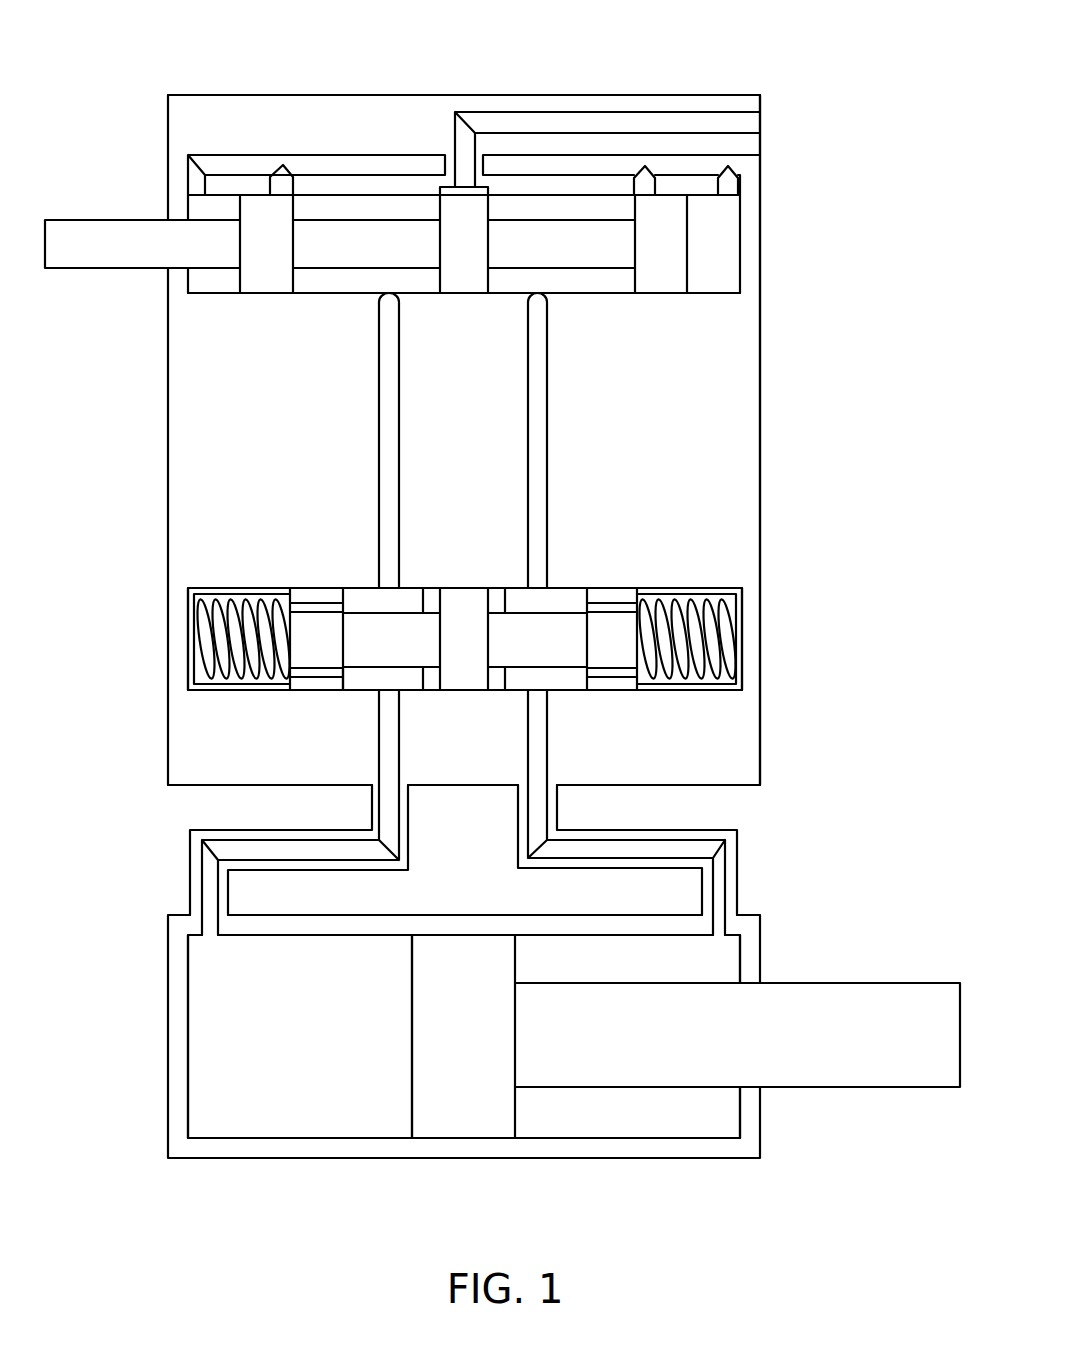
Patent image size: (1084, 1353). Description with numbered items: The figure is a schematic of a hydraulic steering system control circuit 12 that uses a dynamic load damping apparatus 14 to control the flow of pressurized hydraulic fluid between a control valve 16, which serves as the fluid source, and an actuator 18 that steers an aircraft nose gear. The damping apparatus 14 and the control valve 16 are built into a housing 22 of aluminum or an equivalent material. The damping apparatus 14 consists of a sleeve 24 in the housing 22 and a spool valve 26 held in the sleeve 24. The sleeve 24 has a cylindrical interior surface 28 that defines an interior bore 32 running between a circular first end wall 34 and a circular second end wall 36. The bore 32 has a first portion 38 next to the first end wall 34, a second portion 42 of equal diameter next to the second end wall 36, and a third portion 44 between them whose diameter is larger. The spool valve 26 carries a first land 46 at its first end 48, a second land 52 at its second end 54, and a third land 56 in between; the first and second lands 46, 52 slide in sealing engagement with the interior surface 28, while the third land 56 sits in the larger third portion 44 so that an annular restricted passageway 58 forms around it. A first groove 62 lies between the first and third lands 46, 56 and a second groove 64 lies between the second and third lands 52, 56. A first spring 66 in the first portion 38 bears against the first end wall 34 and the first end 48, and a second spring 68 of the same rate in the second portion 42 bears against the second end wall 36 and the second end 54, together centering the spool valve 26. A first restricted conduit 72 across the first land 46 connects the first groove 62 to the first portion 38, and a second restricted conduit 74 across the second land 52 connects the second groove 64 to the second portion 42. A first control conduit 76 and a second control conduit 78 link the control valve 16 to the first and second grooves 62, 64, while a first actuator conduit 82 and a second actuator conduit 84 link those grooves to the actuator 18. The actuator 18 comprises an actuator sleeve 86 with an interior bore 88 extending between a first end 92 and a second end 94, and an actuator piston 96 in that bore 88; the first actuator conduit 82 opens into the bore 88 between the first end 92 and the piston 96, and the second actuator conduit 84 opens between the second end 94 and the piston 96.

The hydraulic steering system control circuit 12 is at (777, 55).
The dynamic load damping apparatus 14 is at (764, 610).
The control valve 16 is at (127, 197).
The actuator 18 is at (780, 1100).
The housing 22 is at (190, 362).
The sleeve 24 is at (748, 591).
The spool valve 26 is at (742, 674).
The cylindrical interior surface 28 is at (363, 603).
The interior bore 32 is at (582, 692).
The first end wall 34 is at (190, 659).
The second end wall 36 is at (735, 657).
The first portion 38 is at (207, 612).
The second portion 42 is at (713, 590).
The third portion 44 is at (441, 692).
The first land 46 is at (305, 685).
The first end 48 is at (290, 690).
The second land 52 is at (623, 690).
The second end 54 is at (670, 688).
The third land 56 is at (458, 682).
The annular restricted passageway 58 is at (500, 588).
The first groove 62 is at (412, 585).
The second groove 64 is at (555, 692).
The first spring 66 is at (190, 640).
The second spring 68 is at (742, 648).
The first restricted conduit 72 is at (320, 676).
The second restricted conduit 74 is at (608, 692).
The first control conduit 76 is at (378, 378).
The second control conduit 78 is at (549, 374).
The first actuator conduit 82 is at (190, 882).
The second actuator conduit 84 is at (737, 886).
The actuator sleeve 86 is at (322, 1158).
The interior bore 88 is at (247, 1112).
The first end 92 is at (193, 1015).
The second end 94 is at (737, 972).
The actuator piston 96 is at (453, 1117).